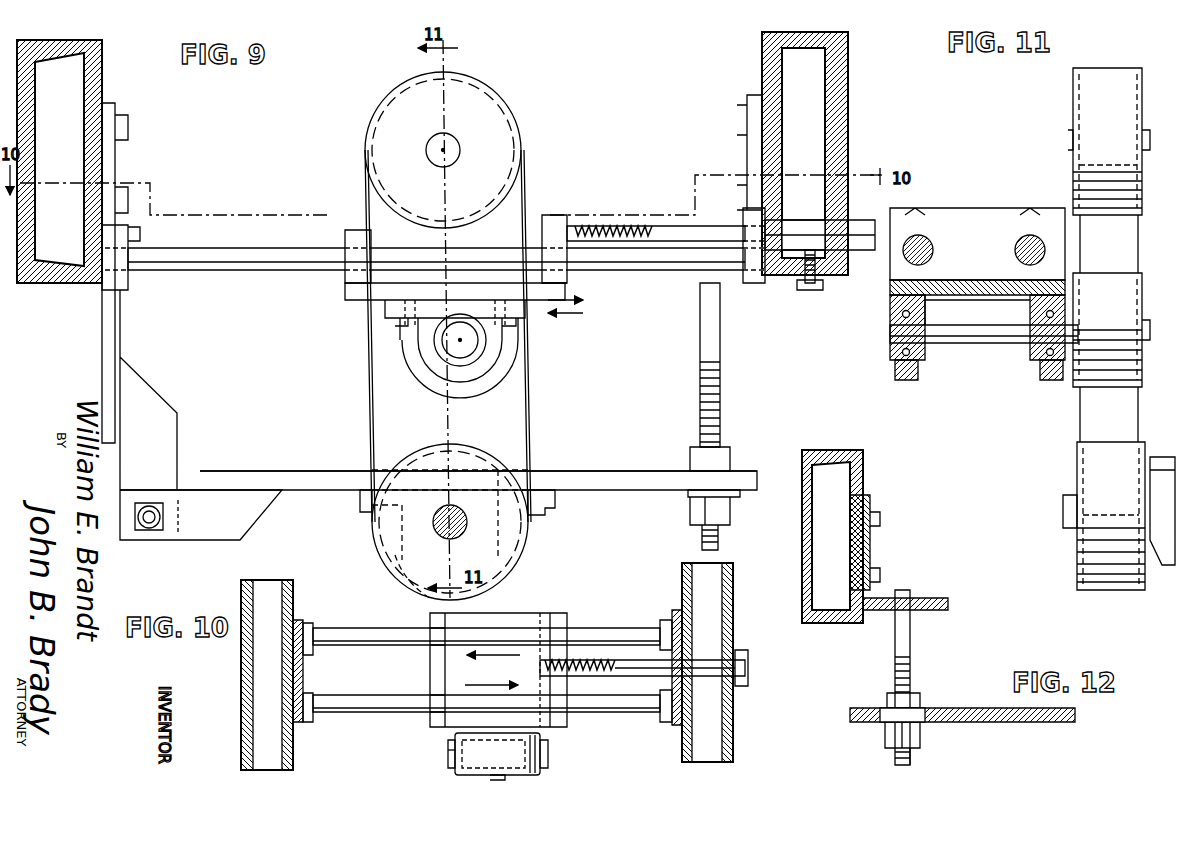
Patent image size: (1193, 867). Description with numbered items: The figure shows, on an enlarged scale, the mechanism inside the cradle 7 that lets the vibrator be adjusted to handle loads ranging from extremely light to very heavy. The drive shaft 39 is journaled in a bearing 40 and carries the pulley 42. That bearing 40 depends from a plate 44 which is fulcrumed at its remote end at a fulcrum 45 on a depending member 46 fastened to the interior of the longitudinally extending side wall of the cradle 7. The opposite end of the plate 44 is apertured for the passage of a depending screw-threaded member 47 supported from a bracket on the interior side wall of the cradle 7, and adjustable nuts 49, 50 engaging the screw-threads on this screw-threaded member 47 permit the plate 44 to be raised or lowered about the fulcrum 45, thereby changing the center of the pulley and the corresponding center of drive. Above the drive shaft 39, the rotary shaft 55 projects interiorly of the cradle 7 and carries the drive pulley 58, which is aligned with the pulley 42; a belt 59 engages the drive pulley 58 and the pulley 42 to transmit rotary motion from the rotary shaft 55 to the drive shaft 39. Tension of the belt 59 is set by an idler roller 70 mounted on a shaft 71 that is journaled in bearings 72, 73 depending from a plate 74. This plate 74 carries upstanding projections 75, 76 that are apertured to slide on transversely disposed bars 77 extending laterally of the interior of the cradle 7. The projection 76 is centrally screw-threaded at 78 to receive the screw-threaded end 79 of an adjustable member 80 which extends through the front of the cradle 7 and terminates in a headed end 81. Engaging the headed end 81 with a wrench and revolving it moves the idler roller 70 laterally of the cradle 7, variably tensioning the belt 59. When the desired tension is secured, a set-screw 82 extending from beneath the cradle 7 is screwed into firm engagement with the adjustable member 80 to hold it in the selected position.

In FIG. 9, the cradle 7 is at (52, 285).
In FIG. 10, the cradle 7 is at (241, 706).
In FIG. 12, the cradle 7 is at (840, 456).
In FIG. 9, the drive shaft 39 is at (462, 518).
In FIG. 11, the drive shaft 39 is at (1148, 508).
In FIG. 9, the bearing 40 is at (505, 546).
In FIG. 11, the bearing 40 is at (1068, 500).
In FIG. 9, the pulley 42 is at (385, 572).
In FIG. 9, the plate 44 is at (622, 470).
In FIG. 12, the plate 44 is at (986, 723).
In FIG. 9, the fulcrum 45 is at (148, 536).
In FIG. 9, the depending member 46 is at (128, 400).
In FIG. 9, the screw-threaded member 47 is at (722, 402).
In FIG. 12, the screw-threaded member 47 is at (911, 676).
In FIG. 9, the adjustable nut 49 is at (731, 460).
In FIG. 9, the adjustable nut 50 is at (730, 512).
In FIG. 12, the adjustable nut 50 is at (884, 740).
In FIG. 9, the rotary shaft 55 is at (452, 142).
In FIG. 11, the rotary shaft 55 is at (1136, 146).
In FIG. 9, the drive pulley 58 is at (500, 128).
In FIG. 11, the drive pulley 58 is at (1096, 80).
In FIG. 9, the belt 59 is at (370, 420).
In FIG. 10, the belt 59 is at (454, 749).
In FIG. 11, the belt 59 is at (1078, 74).
In FIG. 9, the idler roller 70 is at (512, 360).
In FIG. 10, the idler roller 70 is at (541, 758).
In FIG. 11, the idler roller 70 is at (1092, 372).
In FIG. 9, the shaft 71 is at (455, 346).
In FIG. 11, the shaft 71 is at (975, 345).
In FIG. 11, the bearing 72 is at (906, 381).
In FIG. 9, the bearing 73 is at (430, 318).
In FIG. 11, the bearing 73 is at (1036, 360).
In FIG. 9, the plate 74 is at (360, 300).
In FIG. 10, the plate 74 is at (437, 695).
In FIG. 11, the plate 74 is at (977, 320).
In FIG. 9, the upstanding projection 75 is at (356, 230).
In FIG. 10, the upstanding projection 75 is at (437, 658).
In FIG. 9, the upstanding projection 76 is at (560, 242).
In FIG. 10, the upstanding projection 76 is at (568, 728).
In FIG. 9, the transversely disposed bar 77 is at (280, 272).
In FIG. 10, the transversely disposed bar 77 is at (362, 636).
In FIG. 11, the transversely disposed bar 77 is at (1013, 252).
In FIG. 9, the screw-threaded portion 78 is at (555, 218).
In FIG. 10, the screw-threaded portion 78 is at (562, 664).
In FIG. 9, the screw-threaded end 79 is at (620, 228).
In FIG. 10, the screw-threaded end 79 is at (596, 665).
In FIG. 9, the adjustable member 80 is at (690, 242).
In FIG. 10, the adjustable member 80 is at (706, 666).
In FIG. 9, the headed end 81 is at (868, 236).
In FIG. 10, the headed end 81 is at (750, 668).
In FIG. 11, the headed end 81 is at (900, 218).
In FIG. 9, the set-screw 82 is at (808, 294).